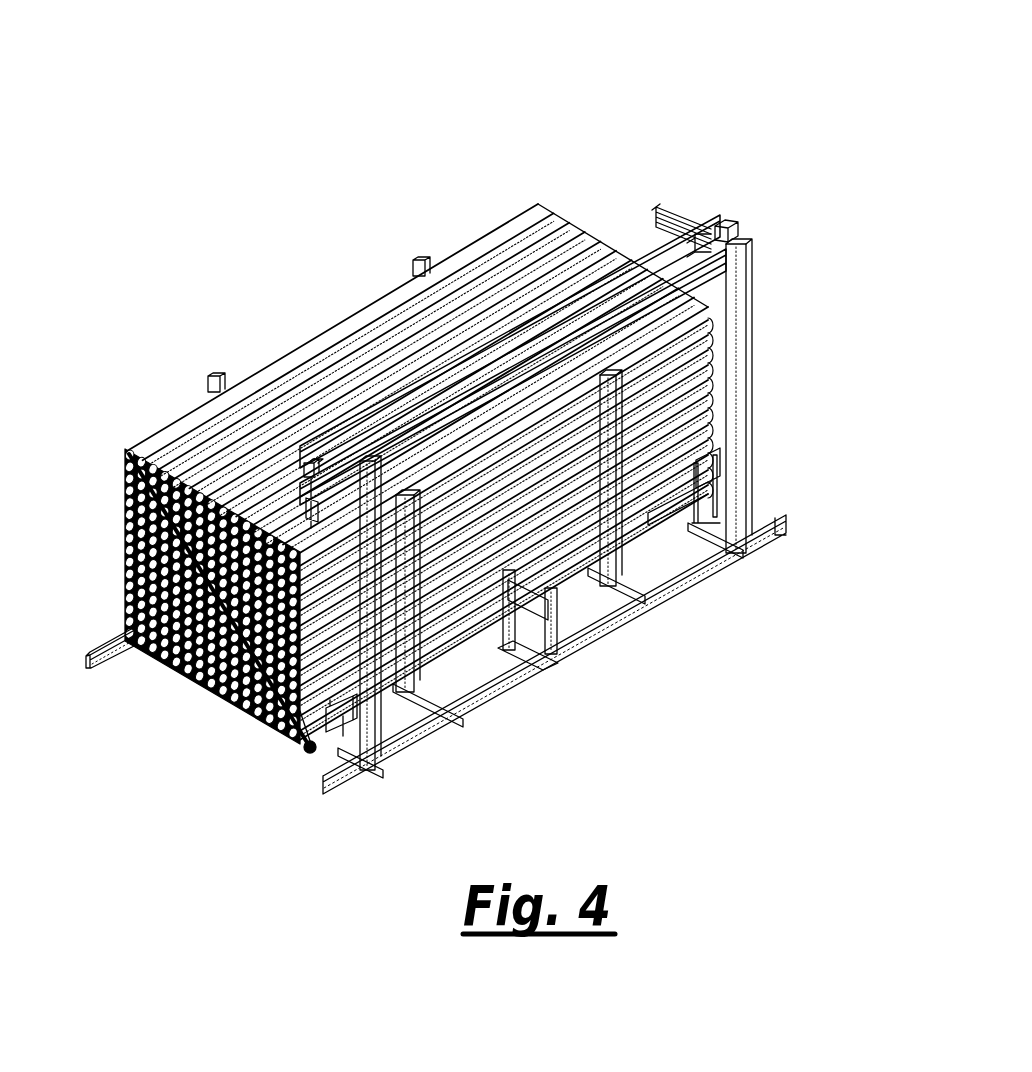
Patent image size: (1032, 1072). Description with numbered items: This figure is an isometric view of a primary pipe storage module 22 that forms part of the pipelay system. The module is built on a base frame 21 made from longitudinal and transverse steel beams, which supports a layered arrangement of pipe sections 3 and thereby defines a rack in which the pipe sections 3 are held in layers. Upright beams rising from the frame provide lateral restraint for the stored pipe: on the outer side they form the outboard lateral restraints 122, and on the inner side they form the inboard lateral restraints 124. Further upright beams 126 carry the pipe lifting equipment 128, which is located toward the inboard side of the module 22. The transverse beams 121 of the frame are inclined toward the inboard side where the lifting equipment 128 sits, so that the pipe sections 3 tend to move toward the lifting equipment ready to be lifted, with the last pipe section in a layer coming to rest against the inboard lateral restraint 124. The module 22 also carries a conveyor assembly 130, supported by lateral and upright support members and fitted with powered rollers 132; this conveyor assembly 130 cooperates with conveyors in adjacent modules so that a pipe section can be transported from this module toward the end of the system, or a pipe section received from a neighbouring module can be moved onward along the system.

The pipe sections 3 is at (215, 455).
The base frame 21 is at (618, 582).
The primary pipe storage module 22 is at (722, 140).
The transverse beams 121 is at (592, 560).
The outboard lateral restraints 122 is at (403, 255).
The inboard lateral restraints 124 is at (390, 682).
The upright beams 126 is at (738, 345).
The pipe lifting equipment 128 is at (742, 208).
The conveyor assembly 130 is at (660, 545).
The powered rollers 132 is at (728, 448).